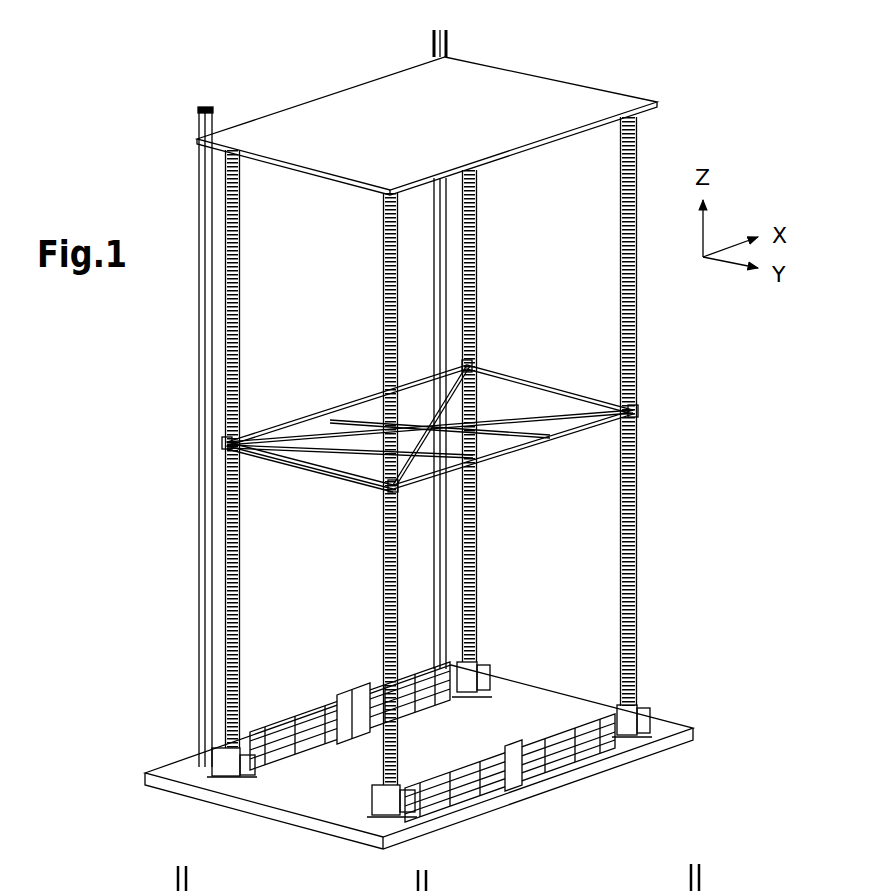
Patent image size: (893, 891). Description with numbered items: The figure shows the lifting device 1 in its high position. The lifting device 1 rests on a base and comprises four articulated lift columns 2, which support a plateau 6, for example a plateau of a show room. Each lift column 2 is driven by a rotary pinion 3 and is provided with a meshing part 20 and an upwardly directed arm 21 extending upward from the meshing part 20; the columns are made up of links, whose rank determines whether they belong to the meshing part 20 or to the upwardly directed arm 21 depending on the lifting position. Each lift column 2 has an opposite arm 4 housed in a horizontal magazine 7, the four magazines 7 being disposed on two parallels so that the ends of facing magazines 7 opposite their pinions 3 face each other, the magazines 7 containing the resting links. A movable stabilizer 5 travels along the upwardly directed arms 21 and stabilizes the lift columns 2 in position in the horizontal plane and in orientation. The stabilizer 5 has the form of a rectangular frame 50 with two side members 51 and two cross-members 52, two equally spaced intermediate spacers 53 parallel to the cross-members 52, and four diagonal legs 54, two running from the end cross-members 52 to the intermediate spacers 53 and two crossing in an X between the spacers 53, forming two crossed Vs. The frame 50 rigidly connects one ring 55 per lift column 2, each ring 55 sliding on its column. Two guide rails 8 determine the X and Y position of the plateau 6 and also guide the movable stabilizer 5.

The lifting device 1 is at (692, 487).
The lift column 2 is at (243, 548).
The rotary pinion 3 is at (425, 812).
The opposite arm 4 is at (432, 750).
The movable stabilizer 5 is at (559, 372).
The plateau 6 is at (440, 121).
The magazine 7 is at (317, 750).
The guide rail 8 is at (433, 45).
The meshing part 20 is at (197, 762).
The upwardly directed arm 21 is at (247, 268).
The rectangular frame 50 is at (430, 376).
The side member 51 is at (421, 365).
The cross-member 52 is at (276, 462).
The intermediate spacer 53 is at (372, 440).
The diagonal leg 54 is at (313, 445).
The ring 55 is at (478, 360).